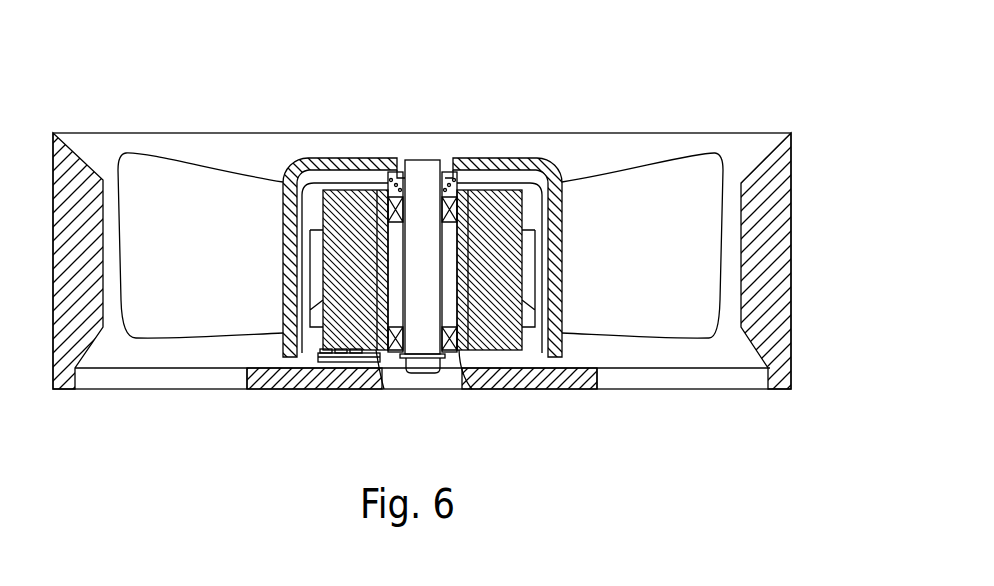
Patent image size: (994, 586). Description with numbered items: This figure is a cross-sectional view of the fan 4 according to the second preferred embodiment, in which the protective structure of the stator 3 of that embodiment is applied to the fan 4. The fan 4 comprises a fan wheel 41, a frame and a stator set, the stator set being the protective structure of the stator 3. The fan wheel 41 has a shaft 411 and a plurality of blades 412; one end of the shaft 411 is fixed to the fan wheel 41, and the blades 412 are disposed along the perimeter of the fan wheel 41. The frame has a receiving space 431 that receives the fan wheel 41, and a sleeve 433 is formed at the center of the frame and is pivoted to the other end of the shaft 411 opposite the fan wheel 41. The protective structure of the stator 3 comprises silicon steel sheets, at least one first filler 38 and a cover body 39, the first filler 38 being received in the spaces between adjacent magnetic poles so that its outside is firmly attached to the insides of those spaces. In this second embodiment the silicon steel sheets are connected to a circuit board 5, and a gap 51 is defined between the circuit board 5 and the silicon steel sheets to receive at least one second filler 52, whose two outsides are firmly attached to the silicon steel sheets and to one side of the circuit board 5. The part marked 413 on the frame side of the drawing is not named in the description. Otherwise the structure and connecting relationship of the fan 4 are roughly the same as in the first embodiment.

The fan 4 is at (783, 95).
The fan wheel 41 is at (483, 162).
The shaft 411 is at (423, 178).
The blades 412 is at (635, 185).
The frame 413 is at (776, 247).
The receiving space 431 is at (703, 358).
The sleeve 433 is at (388, 180).
The stator 3 is at (342, 183).
The cover body 39 is at (310, 182).
The first filler 38 is at (340, 355).
The circuit board 5 is at (368, 360).
The gap 51 is at (320, 355).
The second filler 52 is at (355, 355).